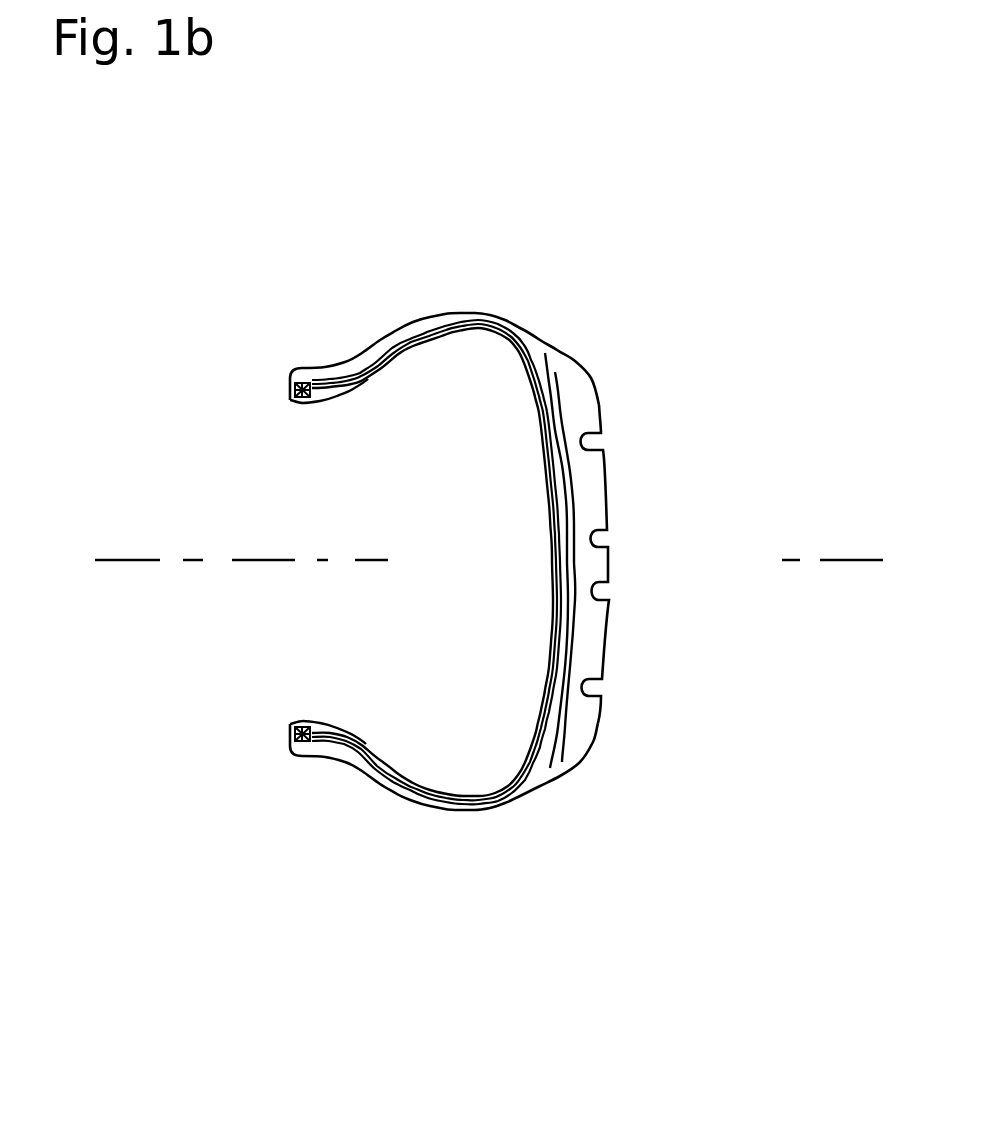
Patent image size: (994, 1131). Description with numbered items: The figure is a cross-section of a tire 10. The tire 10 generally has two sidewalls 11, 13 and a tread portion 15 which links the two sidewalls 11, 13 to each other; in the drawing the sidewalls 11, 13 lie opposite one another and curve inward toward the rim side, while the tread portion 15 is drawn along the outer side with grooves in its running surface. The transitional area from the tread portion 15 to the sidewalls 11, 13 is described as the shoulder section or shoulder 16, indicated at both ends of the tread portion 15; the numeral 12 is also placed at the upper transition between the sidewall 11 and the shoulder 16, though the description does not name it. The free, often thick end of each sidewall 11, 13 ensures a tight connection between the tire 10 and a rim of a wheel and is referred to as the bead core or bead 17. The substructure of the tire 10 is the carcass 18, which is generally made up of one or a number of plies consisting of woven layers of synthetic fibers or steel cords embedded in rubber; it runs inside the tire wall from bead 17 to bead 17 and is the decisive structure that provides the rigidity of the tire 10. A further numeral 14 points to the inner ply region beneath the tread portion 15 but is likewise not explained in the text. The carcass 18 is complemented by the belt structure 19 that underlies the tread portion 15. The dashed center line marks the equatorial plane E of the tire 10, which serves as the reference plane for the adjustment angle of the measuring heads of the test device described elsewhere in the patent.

The tire 10 is at (589, 176).
The sidewall 11 is at (426, 314).
The shoulder region 12 is at (488, 311).
The sidewall 13 is at (393, 804).
The carcass ply 14 is at (550, 533).
The tread portion 15 is at (612, 557).
The shoulder 16 is at (558, 220).
The bead 17 is at (345, 347).
The carcass 18 is at (508, 340).
The belt structure 19 is at (562, 430).
The equatorial plane E is at (135, 557).